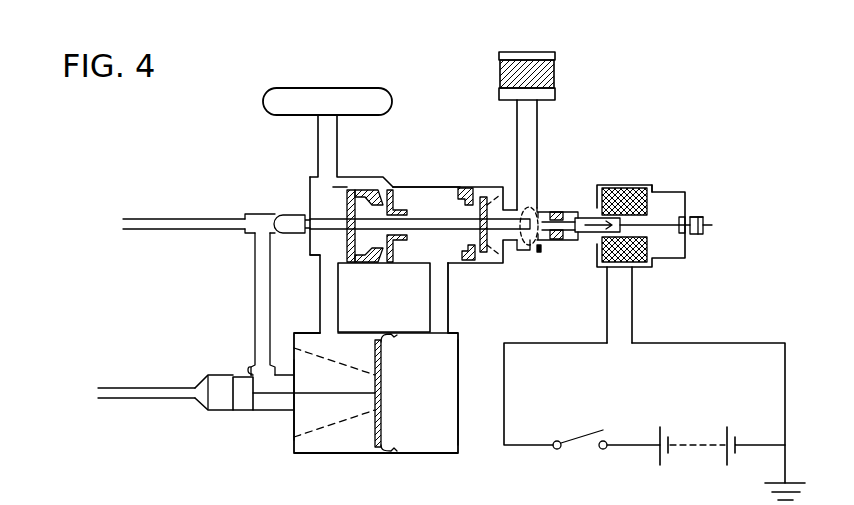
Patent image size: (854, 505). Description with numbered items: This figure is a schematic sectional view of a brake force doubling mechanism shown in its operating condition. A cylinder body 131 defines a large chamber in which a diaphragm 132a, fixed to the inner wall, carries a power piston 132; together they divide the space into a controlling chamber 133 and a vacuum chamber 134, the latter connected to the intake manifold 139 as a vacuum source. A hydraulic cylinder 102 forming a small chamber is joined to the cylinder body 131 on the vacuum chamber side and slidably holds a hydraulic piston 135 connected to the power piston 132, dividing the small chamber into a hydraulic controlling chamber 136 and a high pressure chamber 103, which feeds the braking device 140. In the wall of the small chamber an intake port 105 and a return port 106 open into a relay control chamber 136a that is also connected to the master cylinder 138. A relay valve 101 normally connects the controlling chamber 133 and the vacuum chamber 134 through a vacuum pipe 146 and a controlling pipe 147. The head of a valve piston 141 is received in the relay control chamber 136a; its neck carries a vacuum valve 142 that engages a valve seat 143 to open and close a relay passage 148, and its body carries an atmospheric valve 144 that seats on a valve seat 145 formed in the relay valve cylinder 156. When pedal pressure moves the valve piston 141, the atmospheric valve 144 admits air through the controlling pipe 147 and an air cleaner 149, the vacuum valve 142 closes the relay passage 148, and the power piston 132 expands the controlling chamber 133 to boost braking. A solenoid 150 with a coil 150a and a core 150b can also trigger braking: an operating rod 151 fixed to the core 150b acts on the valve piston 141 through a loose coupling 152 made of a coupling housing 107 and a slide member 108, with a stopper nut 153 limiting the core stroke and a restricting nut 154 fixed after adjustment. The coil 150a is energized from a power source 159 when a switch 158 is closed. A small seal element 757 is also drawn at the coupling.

The relay valve 101 is at (440, 254).
The hydraulic cylinder 102 is at (208, 373).
The high pressure chamber 103 is at (212, 396).
The intake port 105 is at (284, 345).
The return port 106 is at (256, 370).
The coupling housing 107 is at (552, 211).
The slide member 108 is at (524, 252).
The cylinder body 131 is at (352, 455).
The power piston 132 is at (383, 422).
The diaphragm 132a is at (399, 455).
The controlling chamber 133 is at (432, 437).
The vacuum chamber 134 is at (323, 445).
The hydraulic piston 135 is at (232, 406).
The hydraulic controlling chamber 136 is at (280, 410).
The relay control chamber 136a is at (258, 213).
The master cylinder 138 is at (108, 228).
The intake manifold 139 is at (320, 80).
The braking device 140 is at (95, 393).
The valve piston 141 is at (264, 228).
The vacuum valve 142 is at (319, 257).
The valve seat 143 is at (393, 252).
The atmospheric valve 144 is at (484, 196).
The valve seat 145 is at (462, 189).
The vacuum pipe 146 is at (319, 288).
The controlling pipe 147 is at (384, 297).
The relay passage 148 is at (357, 186).
The air cleaner 149 is at (539, 53).
The solenoid 150 is at (650, 227).
The coil 150a is at (620, 188).
The core 150b is at (581, 218).
The operating rod 151 is at (662, 222).
The loose coupling 152 is at (532, 246).
The stopper nut 153 is at (719, 216).
The restricting nut 154 is at (712, 243).
The relay valve cylinder 156 is at (415, 187).
The switch 158 is at (606, 431).
The power source 159 is at (692, 444).
The seal ring 757 is at (541, 251).